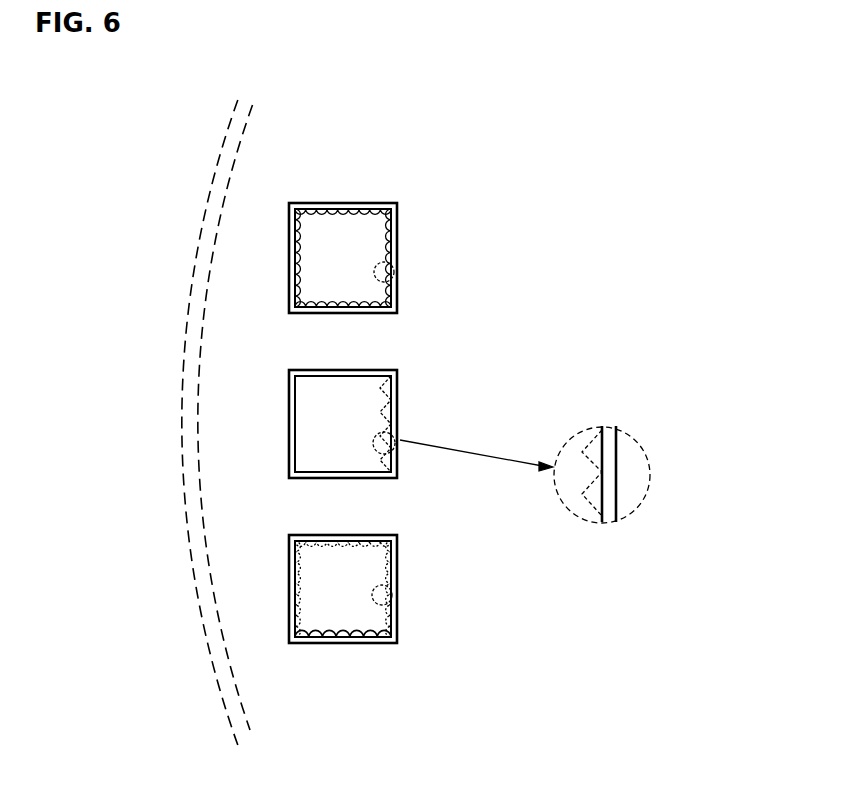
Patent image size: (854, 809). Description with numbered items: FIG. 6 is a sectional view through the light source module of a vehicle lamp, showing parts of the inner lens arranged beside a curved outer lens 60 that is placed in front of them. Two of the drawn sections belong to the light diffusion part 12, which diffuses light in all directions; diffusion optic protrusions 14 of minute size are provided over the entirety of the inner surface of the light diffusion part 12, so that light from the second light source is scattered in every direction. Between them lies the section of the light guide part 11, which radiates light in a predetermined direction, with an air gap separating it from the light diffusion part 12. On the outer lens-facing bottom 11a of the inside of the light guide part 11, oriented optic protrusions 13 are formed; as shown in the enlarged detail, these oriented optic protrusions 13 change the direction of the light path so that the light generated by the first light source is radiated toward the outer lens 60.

The outer lens 60 is at (183, 413).
The light diffusion part 12 is at (346, 203).
The diffusion optic protrusions 14 is at (394, 276).
The light guide part 11 is at (397, 395).
The bottom of the light guide part 11a is at (575, 458).
The oriented optic protrusions 13 is at (575, 500).